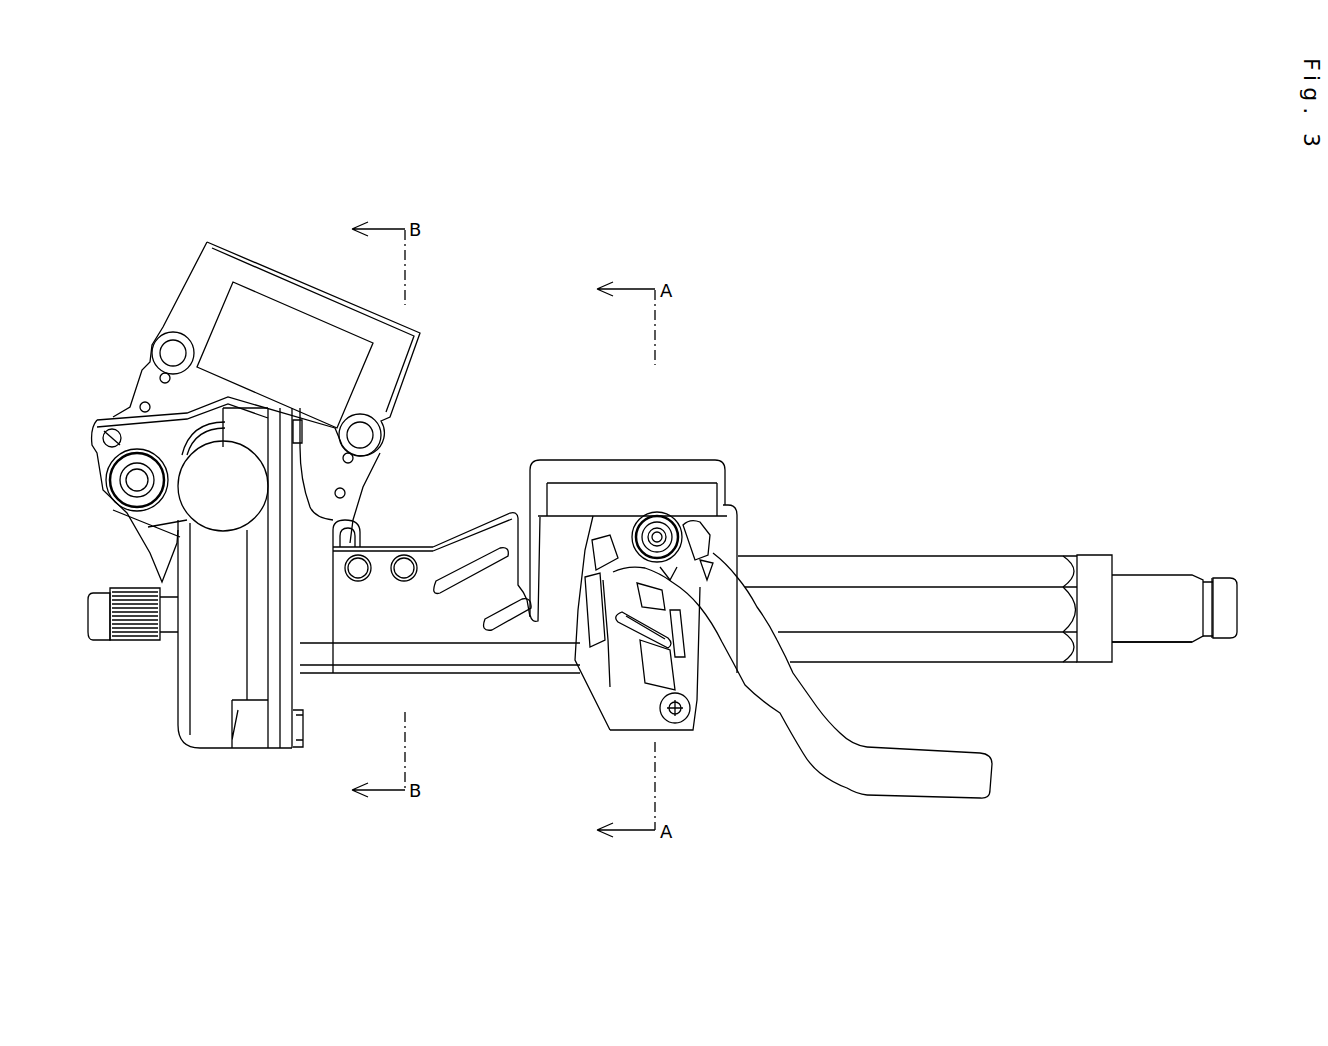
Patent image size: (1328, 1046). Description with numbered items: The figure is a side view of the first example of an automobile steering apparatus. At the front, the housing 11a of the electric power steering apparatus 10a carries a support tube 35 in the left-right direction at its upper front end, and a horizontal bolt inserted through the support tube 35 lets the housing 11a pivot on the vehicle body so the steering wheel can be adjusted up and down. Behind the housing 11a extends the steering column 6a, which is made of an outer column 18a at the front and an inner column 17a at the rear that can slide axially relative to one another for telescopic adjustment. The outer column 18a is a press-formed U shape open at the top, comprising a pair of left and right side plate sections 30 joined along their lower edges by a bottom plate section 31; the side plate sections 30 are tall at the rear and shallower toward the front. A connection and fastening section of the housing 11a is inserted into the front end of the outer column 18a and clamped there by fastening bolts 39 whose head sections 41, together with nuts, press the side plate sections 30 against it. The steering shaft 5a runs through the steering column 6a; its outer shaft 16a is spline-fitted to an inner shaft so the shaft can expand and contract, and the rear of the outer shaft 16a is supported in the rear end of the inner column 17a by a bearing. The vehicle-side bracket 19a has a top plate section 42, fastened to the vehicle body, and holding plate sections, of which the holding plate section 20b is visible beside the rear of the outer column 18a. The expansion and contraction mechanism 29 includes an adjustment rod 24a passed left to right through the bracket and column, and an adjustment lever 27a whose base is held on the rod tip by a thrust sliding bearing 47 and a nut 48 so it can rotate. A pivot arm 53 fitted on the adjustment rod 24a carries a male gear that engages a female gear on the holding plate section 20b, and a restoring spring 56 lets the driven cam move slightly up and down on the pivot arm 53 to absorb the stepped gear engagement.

The support tube 35 is at (103, 430).
The housing 11a is at (218, 640).
The electric power steering apparatus 10a is at (244, 762).
The side plate sections 30 is at (445, 612).
The bottom plate section 31 is at (475, 673).
The fastening bolts 39 is at (358, 581).
The head sections 41 is at (360, 547).
The outer column 18a is at (517, 633).
The top plate section 42 is at (570, 463).
The vehicle-side bracket 19a is at (592, 480).
The expansion and contraction mechanism 29 is at (635, 505).
The adjustment rod 24a is at (655, 512).
The thrust sliding bearing 47 is at (675, 522).
The restoring spring 56 is at (712, 525).
The nut 48 is at (705, 558).
The pivot arm 53 is at (628, 675).
The holding plate section 20b is at (710, 683).
The adjustment lever 27a is at (920, 784).
The steering column 6a is at (998, 570).
The inner column 17a is at (997, 643).
The steering shaft 5a is at (1148, 587).
The outer shaft 16a is at (1150, 626).